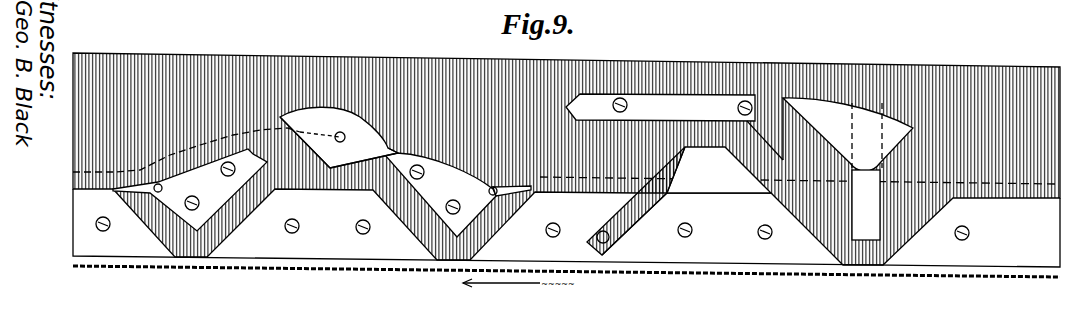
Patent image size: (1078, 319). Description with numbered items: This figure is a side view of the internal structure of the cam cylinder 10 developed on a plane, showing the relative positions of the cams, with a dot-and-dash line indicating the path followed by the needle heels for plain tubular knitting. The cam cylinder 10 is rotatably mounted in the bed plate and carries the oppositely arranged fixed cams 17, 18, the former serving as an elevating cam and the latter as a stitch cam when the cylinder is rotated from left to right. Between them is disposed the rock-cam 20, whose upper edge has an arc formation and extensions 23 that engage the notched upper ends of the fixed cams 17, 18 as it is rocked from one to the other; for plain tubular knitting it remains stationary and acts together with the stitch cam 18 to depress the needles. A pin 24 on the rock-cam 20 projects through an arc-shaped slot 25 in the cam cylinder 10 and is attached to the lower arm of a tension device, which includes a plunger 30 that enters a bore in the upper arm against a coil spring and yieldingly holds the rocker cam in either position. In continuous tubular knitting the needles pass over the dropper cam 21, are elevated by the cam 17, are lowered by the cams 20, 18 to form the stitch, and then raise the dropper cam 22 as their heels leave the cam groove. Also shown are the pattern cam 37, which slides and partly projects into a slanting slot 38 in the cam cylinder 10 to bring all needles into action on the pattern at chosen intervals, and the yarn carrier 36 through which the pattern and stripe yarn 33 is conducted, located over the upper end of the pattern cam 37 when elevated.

The cam cylinder 10 is at (789, 65).
The fixed cam 17 is at (190, 190).
The fixed cam 18 is at (440, 195).
The rock-cam 20 is at (339, 137).
The dropper cam 21 is at (113, 189).
The dropper cam 22 is at (517, 193).
The extensions 23 is at (281, 115).
The pin 24 is at (340, 142).
The arc-shaped slot 25 is at (303, 132).
The plunger 30 is at (719, 170).
The pattern and stripe yarn 33 is at (875, 230).
The yarn carrier 36 is at (848, 134).
The pattern cam 37 is at (623, 220).
The slanting slot 38 is at (668, 178).